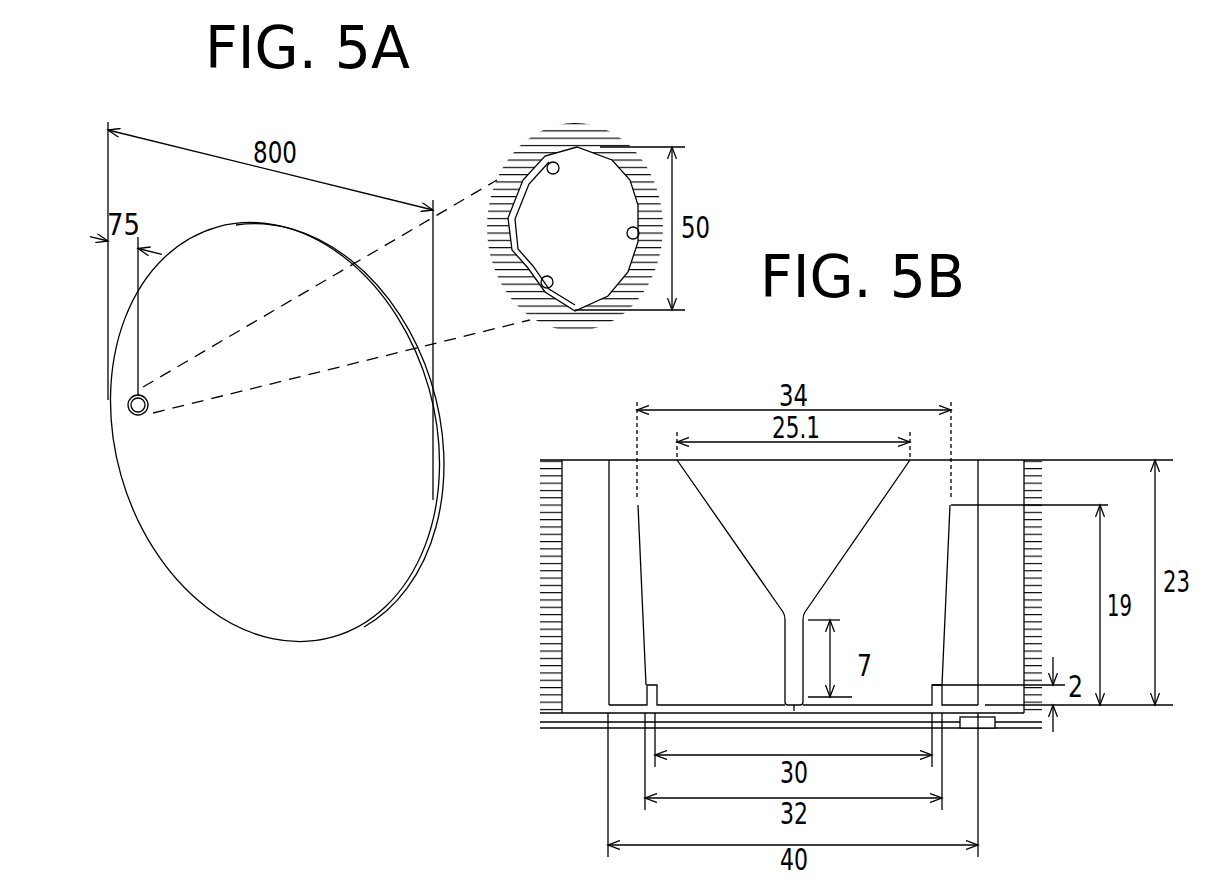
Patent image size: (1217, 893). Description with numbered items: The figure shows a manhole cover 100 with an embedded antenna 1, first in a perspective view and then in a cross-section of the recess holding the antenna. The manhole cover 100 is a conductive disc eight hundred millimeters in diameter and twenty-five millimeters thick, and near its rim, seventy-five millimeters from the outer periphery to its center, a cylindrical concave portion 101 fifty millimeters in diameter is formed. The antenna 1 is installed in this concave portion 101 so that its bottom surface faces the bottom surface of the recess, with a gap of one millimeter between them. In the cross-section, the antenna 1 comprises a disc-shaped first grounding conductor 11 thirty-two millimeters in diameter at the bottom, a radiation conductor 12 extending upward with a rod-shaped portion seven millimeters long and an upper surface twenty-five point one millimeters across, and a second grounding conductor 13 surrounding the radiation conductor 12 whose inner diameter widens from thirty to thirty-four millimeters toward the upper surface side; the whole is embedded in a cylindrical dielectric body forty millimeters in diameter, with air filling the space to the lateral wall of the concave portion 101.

In FIG. 5B, the antenna 1 is at (1003, 762).
In FIG. 5B, the first grounding conductor 11 is at (693, 705).
In FIG. 5B, the radiation conductor 12 is at (865, 485).
In FIG. 5B, the second grounding conductor 13 is at (640, 617).
In FIG. 5A, the manhole cover 100 is at (270, 615).
In FIG. 5B, the manhole cover 100 is at (547, 643).
In FIG. 5A, the concave portion 101 is at (133, 415).
In FIG. 5B, the concave portion 101 is at (1002, 477).